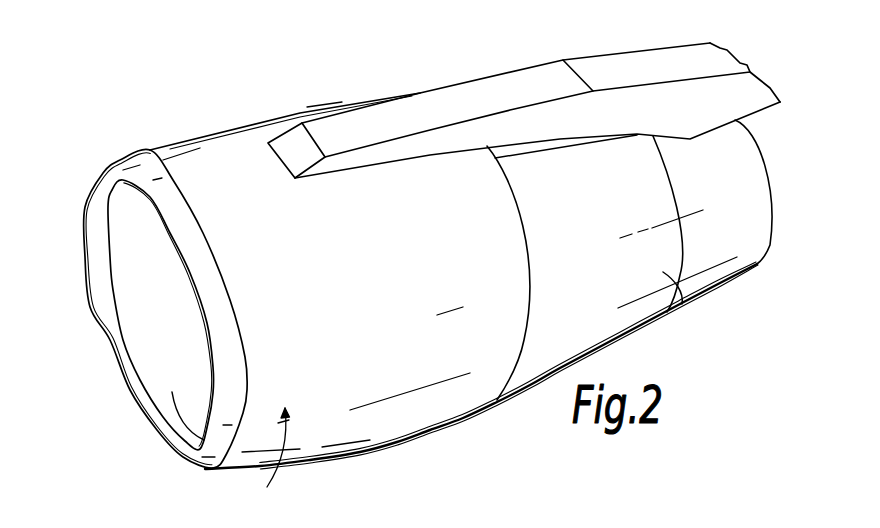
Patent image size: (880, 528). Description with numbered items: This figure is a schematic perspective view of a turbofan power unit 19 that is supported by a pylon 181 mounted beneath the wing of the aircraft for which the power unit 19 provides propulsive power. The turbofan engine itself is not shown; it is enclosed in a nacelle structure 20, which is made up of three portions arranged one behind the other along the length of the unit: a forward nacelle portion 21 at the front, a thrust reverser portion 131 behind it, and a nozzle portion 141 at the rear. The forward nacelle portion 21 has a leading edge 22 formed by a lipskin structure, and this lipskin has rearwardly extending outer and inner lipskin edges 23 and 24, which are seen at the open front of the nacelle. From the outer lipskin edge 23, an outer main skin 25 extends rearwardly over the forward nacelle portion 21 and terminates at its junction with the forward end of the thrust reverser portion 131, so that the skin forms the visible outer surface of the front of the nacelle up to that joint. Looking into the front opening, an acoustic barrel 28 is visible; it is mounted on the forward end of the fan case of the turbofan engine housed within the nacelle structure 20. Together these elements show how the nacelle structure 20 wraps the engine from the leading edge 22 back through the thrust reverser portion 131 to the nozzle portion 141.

The power unit 19 is at (188, 120).
The nacelle structure 20 is at (396, 452).
The forward nacelle portion 21 is at (267, 487).
The leading edge 22 is at (87, 193).
The outer lipskin edge 23 is at (202, 260).
The inner lipskin edge 24 is at (128, 360).
The outer main skin 25 is at (473, 227).
The acoustic barrel 28 is at (175, 393).
The thrust reverser portion 131 is at (672, 284).
The nozzle portion 141 is at (725, 163).
The pylon 181 is at (441, 105).